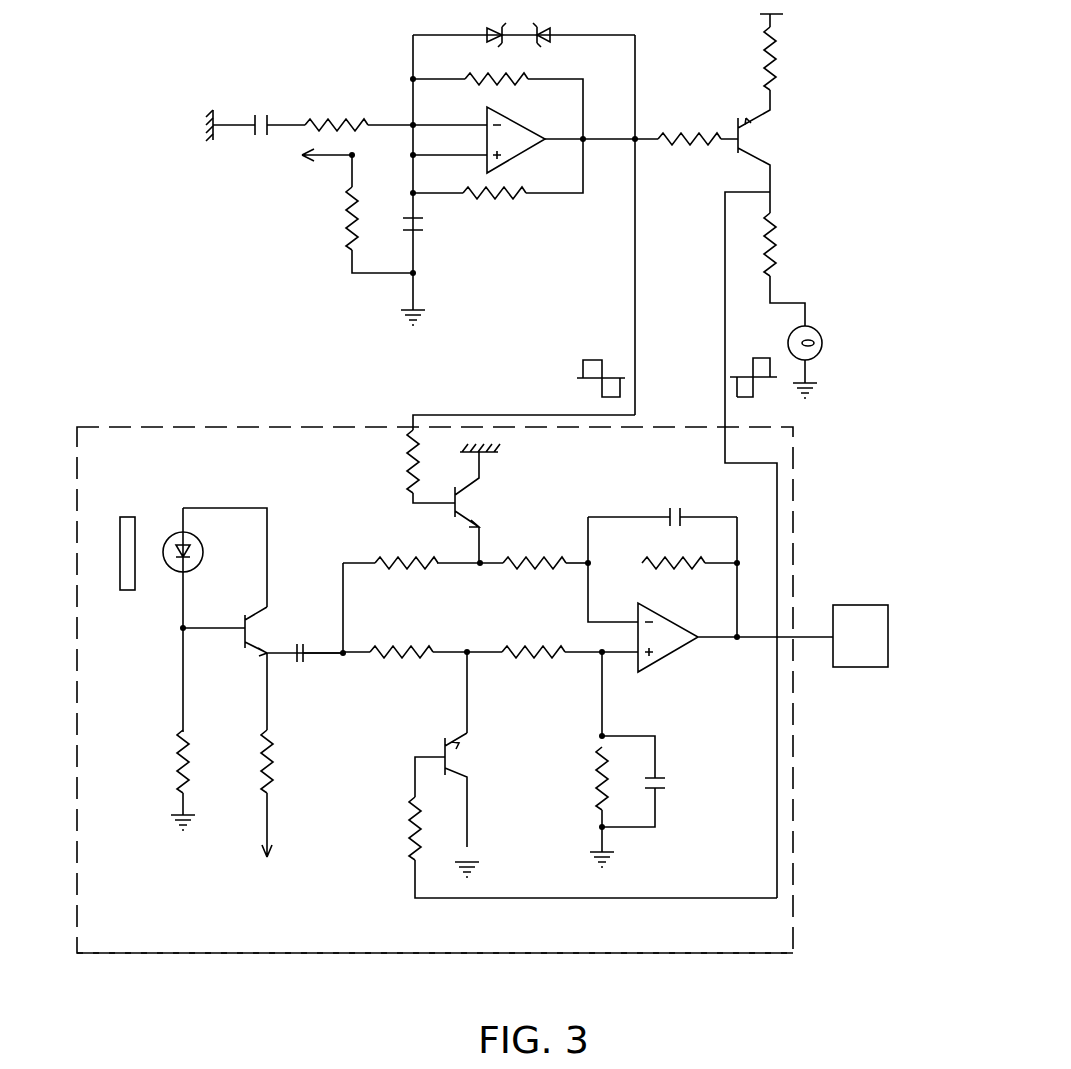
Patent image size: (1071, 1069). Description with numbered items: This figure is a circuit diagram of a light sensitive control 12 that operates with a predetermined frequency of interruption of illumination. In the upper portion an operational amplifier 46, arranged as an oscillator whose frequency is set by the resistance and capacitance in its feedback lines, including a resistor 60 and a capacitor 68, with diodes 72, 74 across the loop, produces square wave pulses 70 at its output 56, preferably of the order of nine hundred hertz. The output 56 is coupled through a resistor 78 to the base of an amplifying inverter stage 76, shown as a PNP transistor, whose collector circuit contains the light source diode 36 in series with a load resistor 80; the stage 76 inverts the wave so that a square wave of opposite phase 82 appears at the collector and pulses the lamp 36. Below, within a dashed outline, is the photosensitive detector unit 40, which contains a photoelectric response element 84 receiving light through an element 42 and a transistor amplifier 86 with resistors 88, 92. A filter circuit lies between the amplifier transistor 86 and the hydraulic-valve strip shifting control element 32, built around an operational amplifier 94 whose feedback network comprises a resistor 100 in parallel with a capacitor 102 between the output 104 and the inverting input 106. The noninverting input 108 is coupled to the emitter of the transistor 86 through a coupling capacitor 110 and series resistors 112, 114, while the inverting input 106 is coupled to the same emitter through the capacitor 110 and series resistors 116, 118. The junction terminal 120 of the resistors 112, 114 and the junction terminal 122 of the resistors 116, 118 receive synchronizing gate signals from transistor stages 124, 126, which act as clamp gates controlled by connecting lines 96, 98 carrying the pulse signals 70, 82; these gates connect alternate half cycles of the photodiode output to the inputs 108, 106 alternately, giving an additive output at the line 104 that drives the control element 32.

The sensing device 12 is at (823, 787).
The strip shifting control element 32 is at (862, 668).
The light source diode 36 is at (821, 331).
The photosensitive detector unit 40 is at (440, 955).
The light receiving element 42 is at (122, 556).
The operational amplifier 46 is at (527, 140).
The output 56 is at (527, 132).
The resistor 60 is at (497, 198).
The capacitor 68 is at (425, 227).
The square wave pulse 70 is at (583, 368).
The zener diode 72 is at (493, 26).
The zener diode 74 is at (557, 12).
The amplifying inverter stage 76 is at (754, 147).
The resistor 78 is at (680, 130).
The load resistor 80 is at (776, 240).
The square wave pulse 82 is at (748, 398).
The photoelectric response element 84 is at (205, 548).
The transistor amplifier 86 is at (272, 616).
The resistor 88 is at (178, 765).
The resistor 92 is at (276, 757).
The operational amplifier 94 is at (672, 646).
The connecting line 96 is at (527, 413).
The connecting line 98 is at (780, 483).
The resistor 100 is at (675, 560).
The capacitor 102 is at (675, 514).
The output 104 is at (718, 641).
The inverting input 106 is at (605, 620).
The noninverting input 108 is at (625, 656).
The coupling capacitor 110 is at (306, 661).
The resistor 112 is at (400, 650).
The resistor 114 is at (520, 650).
The resistor 116 is at (400, 561).
The resistor 118 is at (522, 560).
The junction terminal 120 is at (470, 688).
The junction terminal 122 is at (479, 568).
The transistor stage 124 is at (472, 506).
The transistor stage 126 is at (462, 766).